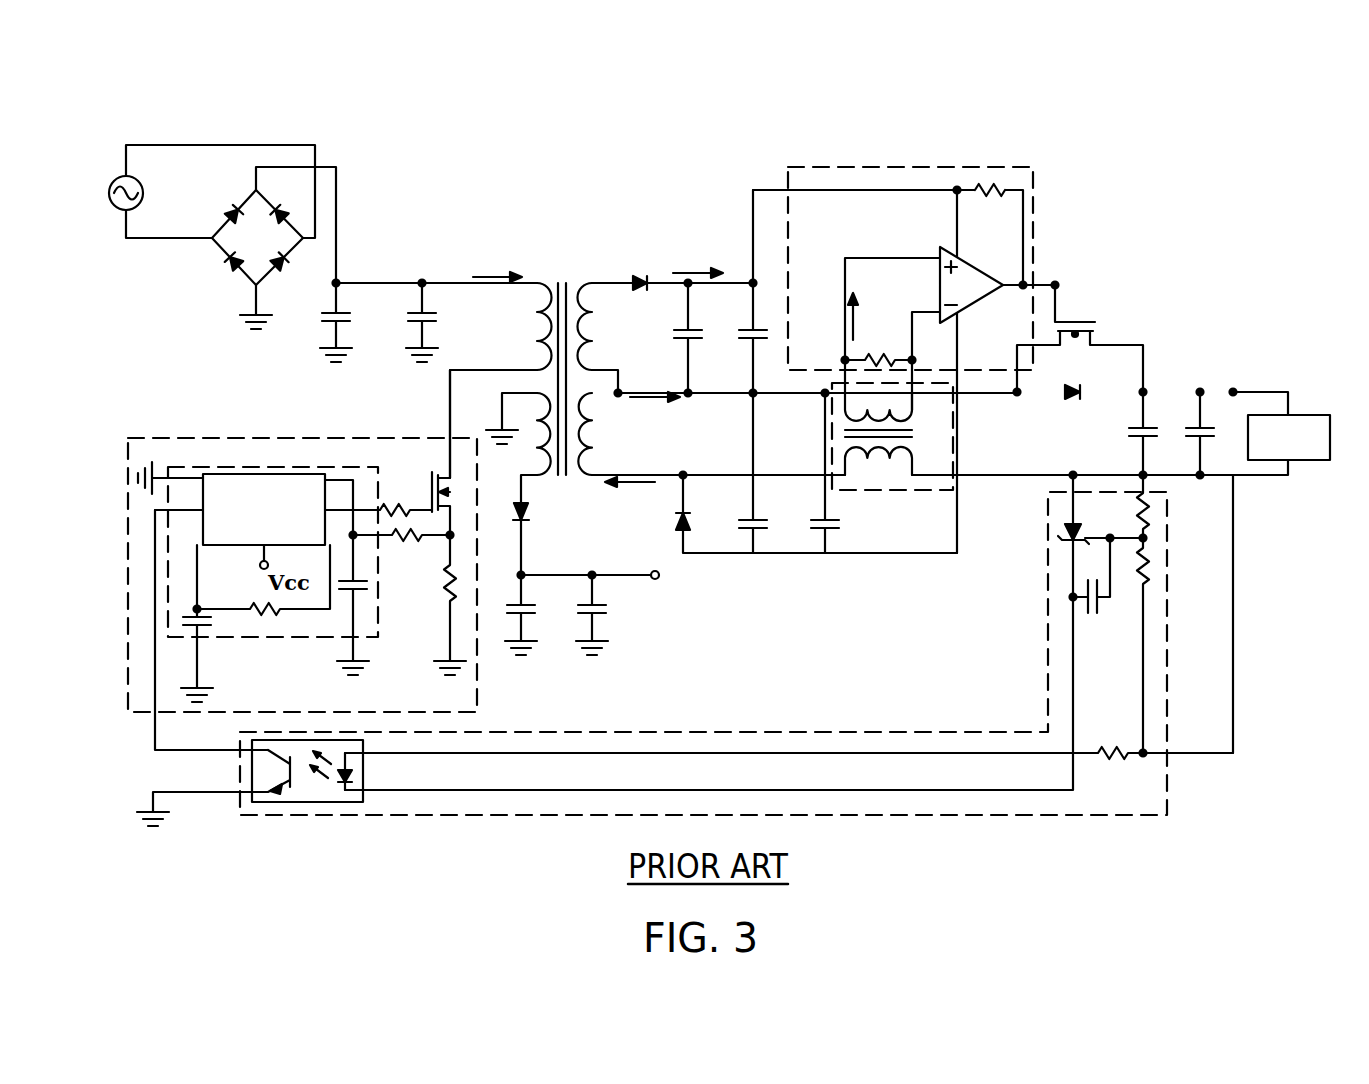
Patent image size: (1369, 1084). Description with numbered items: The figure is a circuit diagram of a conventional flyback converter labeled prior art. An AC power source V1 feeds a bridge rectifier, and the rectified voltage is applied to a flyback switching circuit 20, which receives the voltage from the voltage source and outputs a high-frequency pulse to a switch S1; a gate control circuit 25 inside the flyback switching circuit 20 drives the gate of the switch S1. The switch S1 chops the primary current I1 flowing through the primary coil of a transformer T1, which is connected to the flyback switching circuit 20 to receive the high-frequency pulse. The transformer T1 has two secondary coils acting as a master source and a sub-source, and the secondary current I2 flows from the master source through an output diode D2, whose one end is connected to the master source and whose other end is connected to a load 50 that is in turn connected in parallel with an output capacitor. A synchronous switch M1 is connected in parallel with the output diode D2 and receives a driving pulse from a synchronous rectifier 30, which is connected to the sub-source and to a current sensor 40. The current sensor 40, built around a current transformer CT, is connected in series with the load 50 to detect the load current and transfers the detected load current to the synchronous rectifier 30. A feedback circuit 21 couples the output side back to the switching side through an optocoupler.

The flyback switching circuit 20 is at (162, 445).
The feedback circuit 21 is at (858, 732).
The gate control circuit 25 is at (360, 470).
The synchronous rectifier 30 is at (988, 170).
The current sensor 40 is at (868, 483).
The load 50 is at (1321, 422).
The power source V1 is at (144, 193).
The primary current I1 is at (497, 265).
The secondary current I2 is at (655, 411).
The transformer T1 is at (564, 363).
The switch S1 is at (430, 492).
The synchronous switch M1 is at (1093, 336).
The output diode D2 is at (1078, 408).
The current transformer CT is at (897, 434).